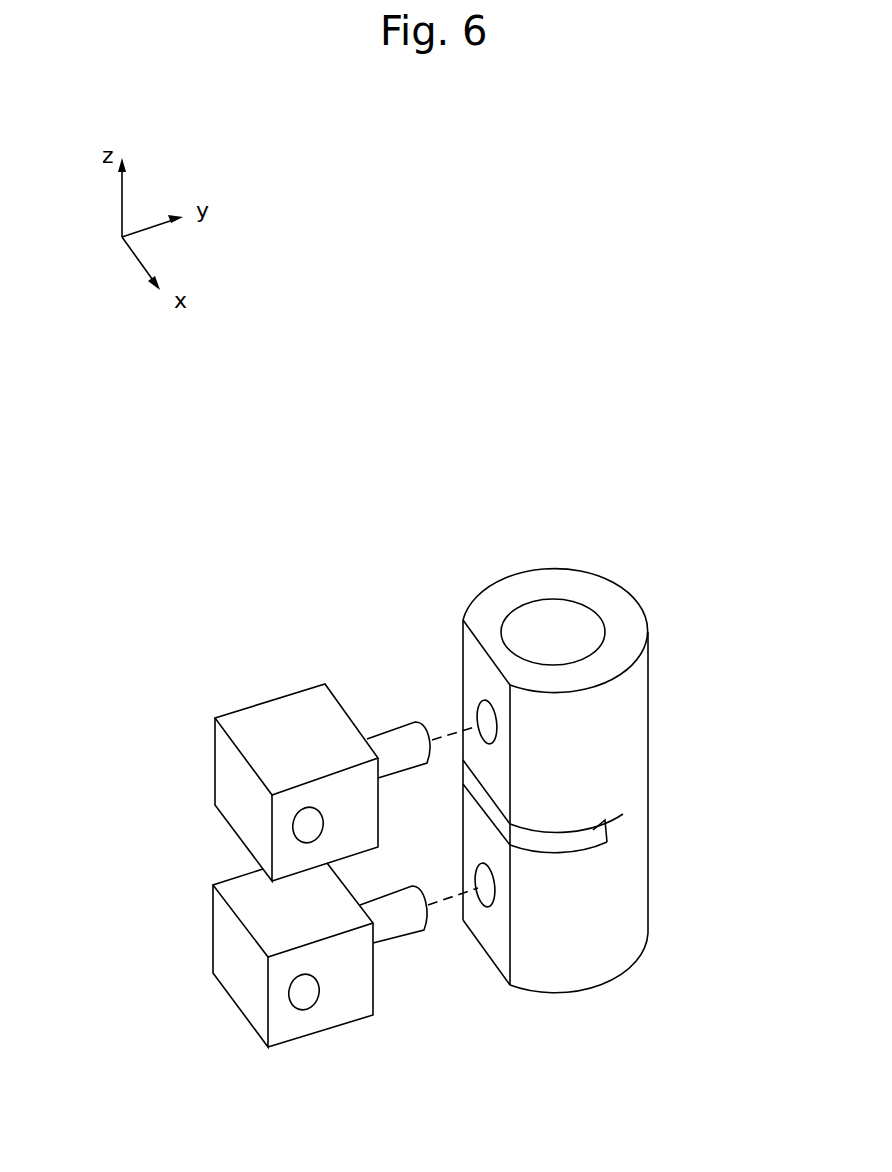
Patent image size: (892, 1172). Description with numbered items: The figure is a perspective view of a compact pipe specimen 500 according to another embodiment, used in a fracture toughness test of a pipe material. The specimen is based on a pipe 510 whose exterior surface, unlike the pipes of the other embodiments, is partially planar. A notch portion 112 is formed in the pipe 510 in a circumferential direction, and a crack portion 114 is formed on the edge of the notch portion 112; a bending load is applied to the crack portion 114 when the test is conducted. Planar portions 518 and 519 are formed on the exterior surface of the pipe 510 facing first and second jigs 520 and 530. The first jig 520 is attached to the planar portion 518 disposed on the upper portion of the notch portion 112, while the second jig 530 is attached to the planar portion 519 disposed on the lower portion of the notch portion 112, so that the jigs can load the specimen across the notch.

The compact pipe specimen 500 is at (527, 488).
The pipe 510 is at (630, 714).
The planar portion 518 is at (475, 676).
The planar portion 519 is at (485, 927).
The first jig 520 is at (273, 715).
The second jig 530 is at (240, 997).
The notch portion 112 is at (576, 849).
The crack portion 114 is at (612, 826).